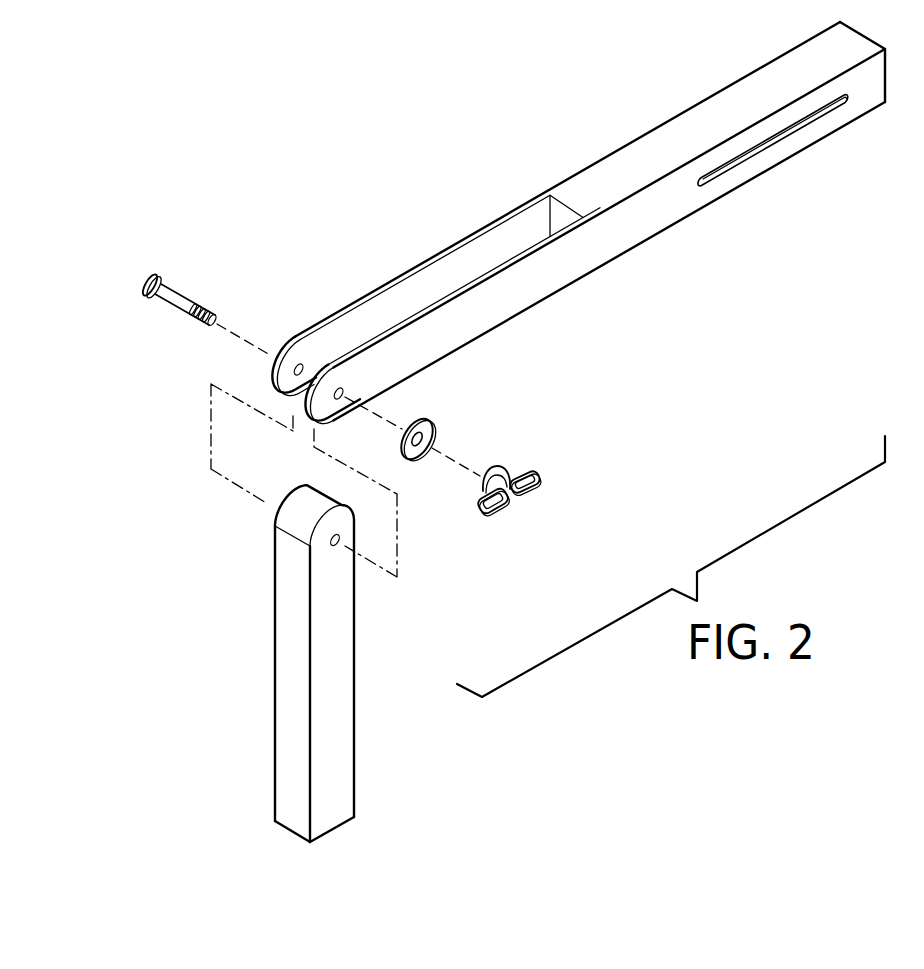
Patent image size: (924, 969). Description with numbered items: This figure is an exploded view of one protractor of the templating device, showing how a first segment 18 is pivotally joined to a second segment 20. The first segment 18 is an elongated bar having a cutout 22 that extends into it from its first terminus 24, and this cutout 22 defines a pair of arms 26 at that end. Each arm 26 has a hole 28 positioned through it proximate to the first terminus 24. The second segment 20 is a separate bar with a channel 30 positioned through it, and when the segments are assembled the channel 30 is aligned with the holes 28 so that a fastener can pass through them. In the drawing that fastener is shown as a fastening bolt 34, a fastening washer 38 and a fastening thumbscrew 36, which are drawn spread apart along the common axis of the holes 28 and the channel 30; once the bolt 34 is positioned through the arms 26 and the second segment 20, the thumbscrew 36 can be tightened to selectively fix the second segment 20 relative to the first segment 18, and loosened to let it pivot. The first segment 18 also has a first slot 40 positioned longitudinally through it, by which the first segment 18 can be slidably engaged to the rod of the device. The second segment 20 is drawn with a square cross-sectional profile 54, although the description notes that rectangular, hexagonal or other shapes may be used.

The first segment 18 is at (654, 130).
The second segment 20 is at (332, 663).
The cutout 22 is at (520, 230).
The first terminus 24 is at (265, 370).
The arms 26 is at (447, 325).
The hole 28 is at (301, 362).
The channel 30 is at (323, 547).
The fastening bolt 34 is at (185, 292).
The fastening thumbscrew 36 is at (517, 463).
The fastening washer 38 is at (440, 413).
The first slot 40 is at (747, 158).
The cross-sectional profile 54 is at (332, 833).